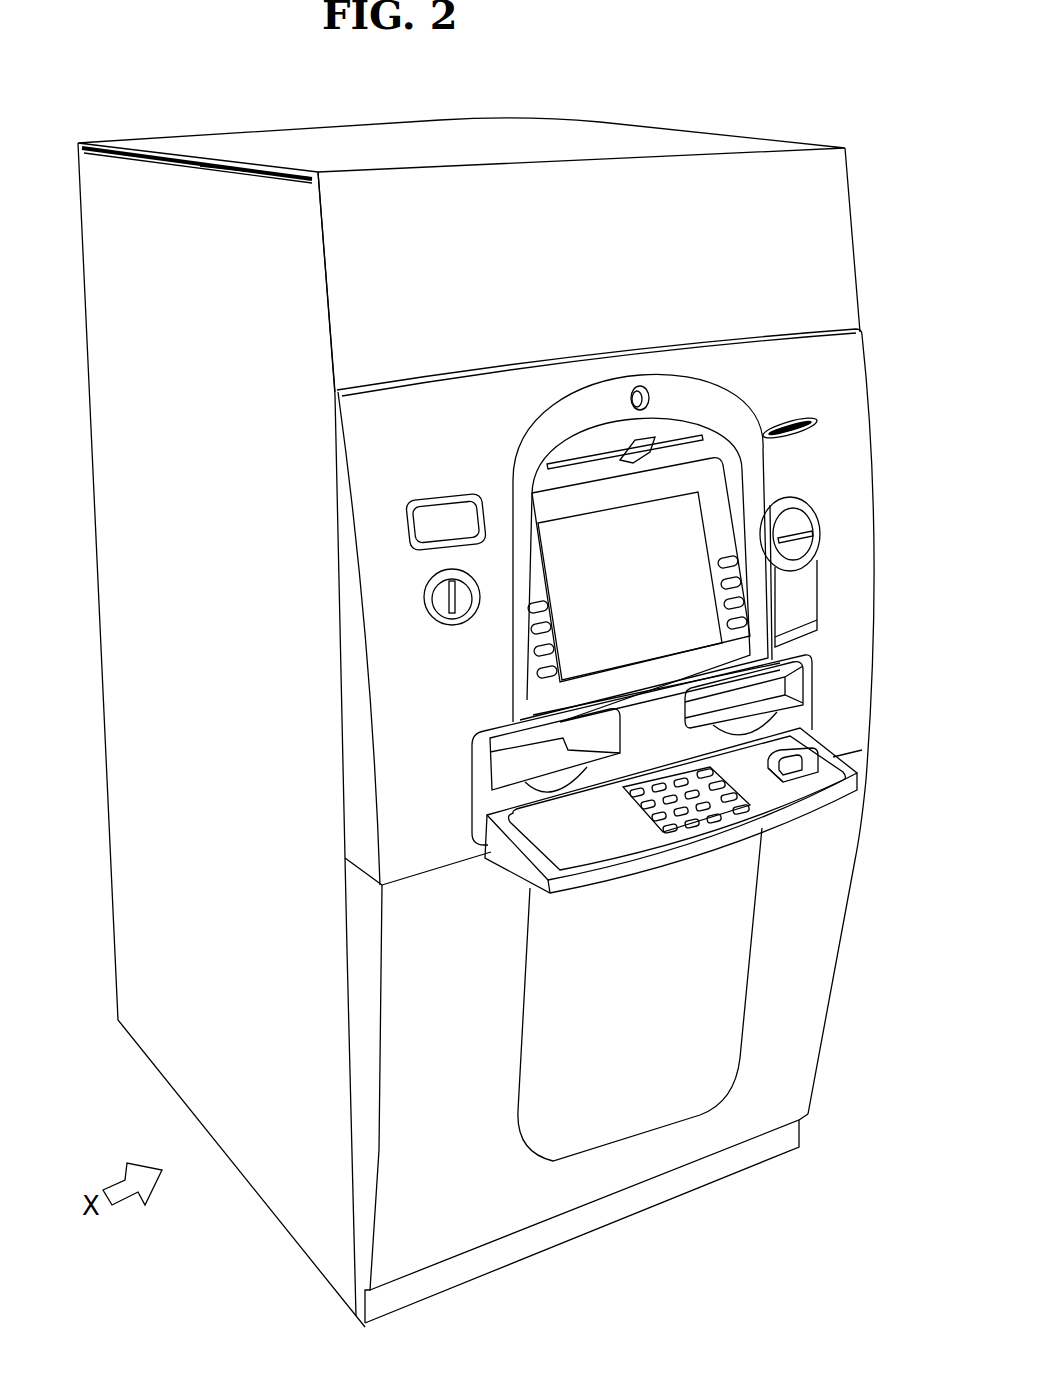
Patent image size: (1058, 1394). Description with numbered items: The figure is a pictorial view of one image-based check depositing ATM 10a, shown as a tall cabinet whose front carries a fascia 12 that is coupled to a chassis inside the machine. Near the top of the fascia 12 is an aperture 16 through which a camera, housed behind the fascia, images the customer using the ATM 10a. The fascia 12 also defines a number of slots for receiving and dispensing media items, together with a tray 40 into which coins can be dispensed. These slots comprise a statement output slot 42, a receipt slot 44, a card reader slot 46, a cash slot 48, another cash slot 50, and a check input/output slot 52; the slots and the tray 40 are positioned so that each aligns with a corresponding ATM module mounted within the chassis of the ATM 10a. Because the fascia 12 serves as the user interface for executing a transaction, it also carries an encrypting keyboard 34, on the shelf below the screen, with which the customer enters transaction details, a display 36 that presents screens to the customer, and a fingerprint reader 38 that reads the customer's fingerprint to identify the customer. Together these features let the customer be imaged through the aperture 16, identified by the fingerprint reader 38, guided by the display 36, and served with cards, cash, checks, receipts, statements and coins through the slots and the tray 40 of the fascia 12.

The check depositing ATM 10a is at (680, 90).
The fascia 12 is at (335, 456).
The aperture 16 is at (647, 390).
The encrypting keyboard 34 is at (750, 800).
The display 36 is at (705, 503).
The fingerprint reader 38 is at (812, 775).
The tray 40 is at (425, 604).
The statement output slot 42 is at (678, 438).
The receipt slot 44 is at (810, 424).
The card reader slot 46 is at (815, 541).
The cash slot 48 is at (474, 770).
The cash slot 50 is at (787, 685).
The check input/output slot 52 is at (410, 527).